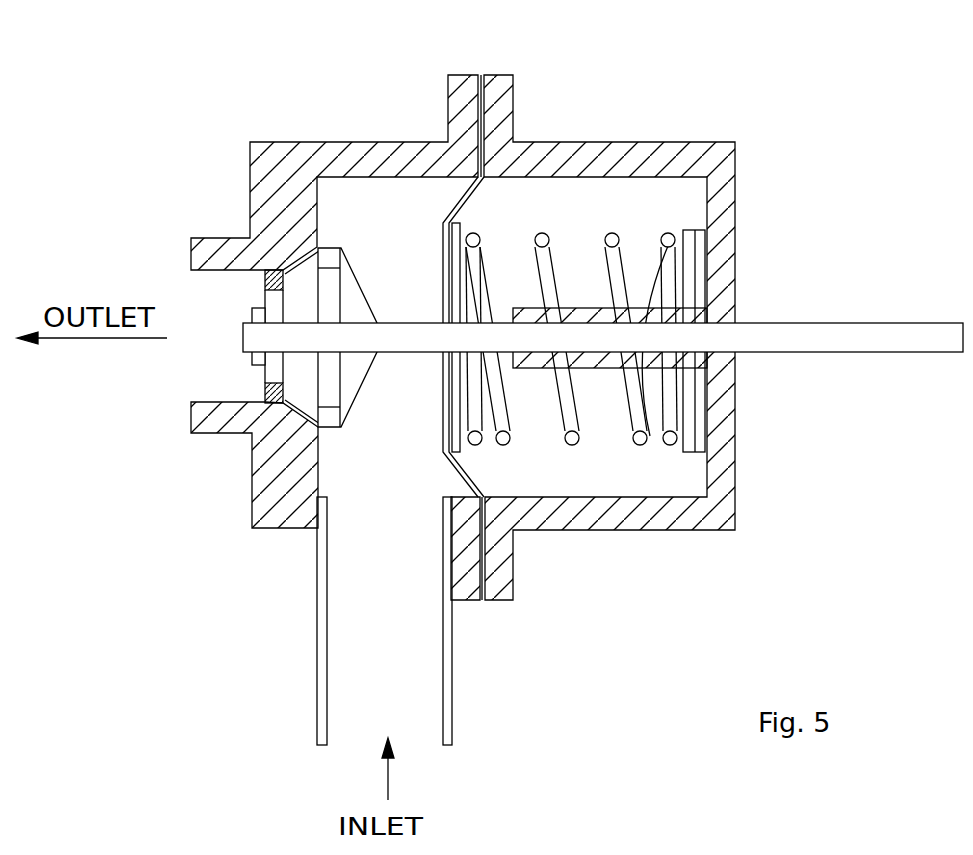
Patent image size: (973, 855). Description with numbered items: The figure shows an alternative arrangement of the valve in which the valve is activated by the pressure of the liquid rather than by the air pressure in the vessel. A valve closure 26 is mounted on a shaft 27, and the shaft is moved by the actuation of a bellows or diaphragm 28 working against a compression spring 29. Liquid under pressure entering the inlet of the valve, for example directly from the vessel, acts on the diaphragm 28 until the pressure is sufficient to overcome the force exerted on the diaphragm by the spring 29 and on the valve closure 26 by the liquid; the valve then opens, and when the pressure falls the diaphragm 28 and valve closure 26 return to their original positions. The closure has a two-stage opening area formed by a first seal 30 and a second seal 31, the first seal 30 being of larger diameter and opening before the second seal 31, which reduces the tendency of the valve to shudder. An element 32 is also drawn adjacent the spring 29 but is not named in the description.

The valve closure 26 is at (357, 262).
The shaft 27 is at (787, 325).
The diaphragm 28 is at (480, 75).
The compression spring 29 is at (613, 232).
The first seal 30 is at (313, 423).
The second seal 31 is at (263, 390).
The spring seat plate 32 is at (700, 260).